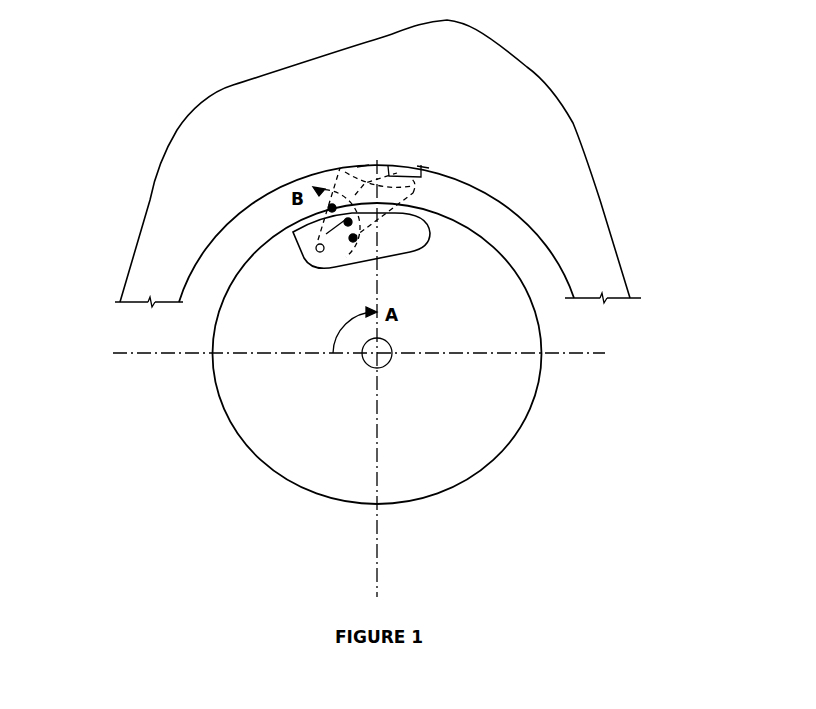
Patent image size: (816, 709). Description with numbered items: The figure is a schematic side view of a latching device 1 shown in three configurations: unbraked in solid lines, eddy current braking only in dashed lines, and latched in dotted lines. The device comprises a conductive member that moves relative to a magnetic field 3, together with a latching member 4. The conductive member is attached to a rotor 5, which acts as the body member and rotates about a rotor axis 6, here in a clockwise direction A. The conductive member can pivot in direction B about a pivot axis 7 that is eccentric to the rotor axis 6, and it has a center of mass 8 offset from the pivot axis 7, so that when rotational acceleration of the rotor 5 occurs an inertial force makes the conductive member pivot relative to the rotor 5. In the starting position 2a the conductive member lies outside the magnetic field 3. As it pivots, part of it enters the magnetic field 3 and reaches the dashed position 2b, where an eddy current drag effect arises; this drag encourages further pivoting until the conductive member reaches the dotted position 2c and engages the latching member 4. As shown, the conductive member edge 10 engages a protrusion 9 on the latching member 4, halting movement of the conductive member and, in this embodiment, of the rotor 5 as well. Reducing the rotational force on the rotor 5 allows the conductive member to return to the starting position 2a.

The latching device 1 is at (152, 410).
The starting position of conductive member 2a is at (430, 233).
The braking position of conductive member 2b is at (418, 191).
The latched position of conductive member 2c is at (345, 170).
The magnetic field 3 is at (376, 233).
The latching member 4 is at (378, 163).
The rotor 5 is at (519, 375).
The rotor axis 6 is at (387, 364).
The pivot axis 7 is at (317, 252).
The center of mass 8 is at (332, 233).
The protrusion 9 is at (423, 165).
The conductive member edge 10 is at (363, 165).